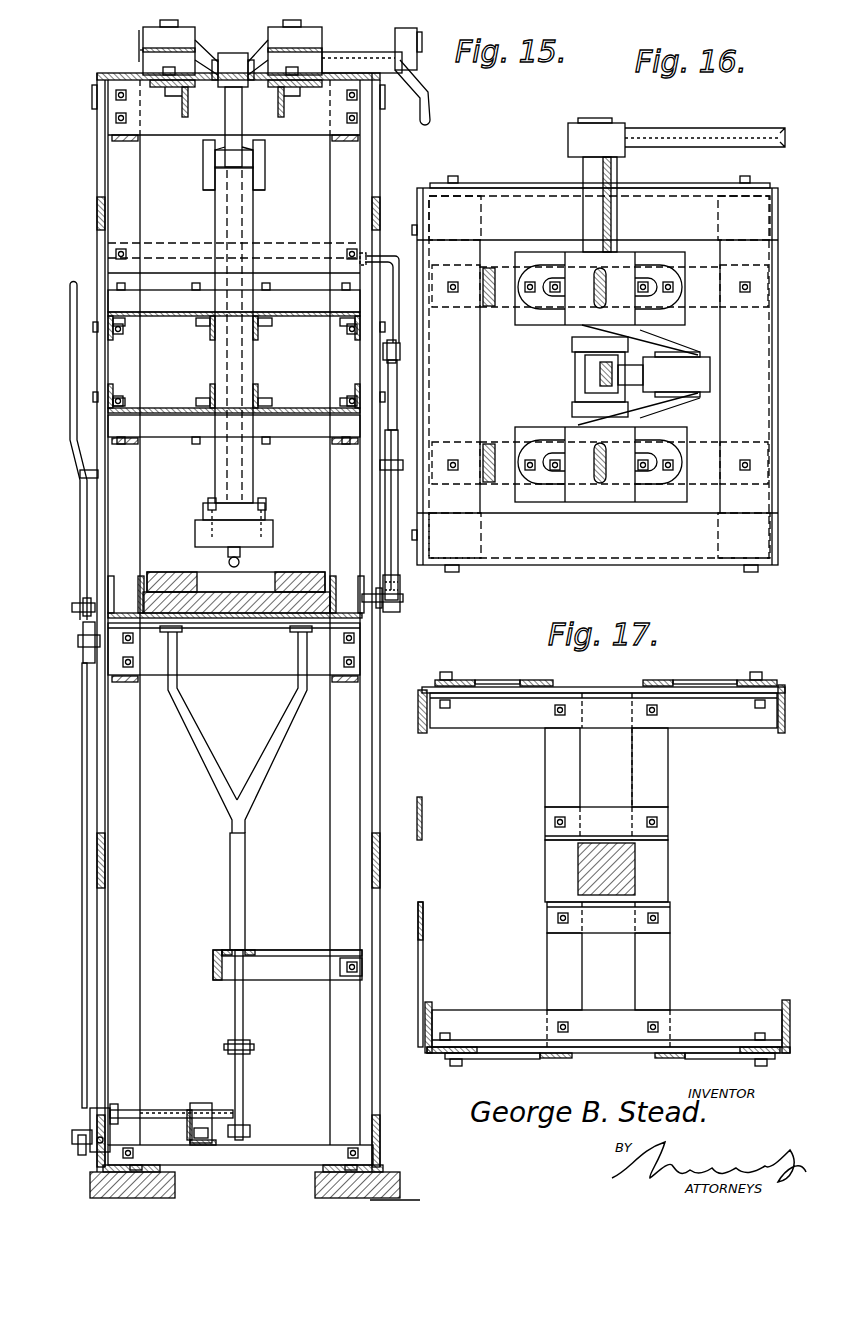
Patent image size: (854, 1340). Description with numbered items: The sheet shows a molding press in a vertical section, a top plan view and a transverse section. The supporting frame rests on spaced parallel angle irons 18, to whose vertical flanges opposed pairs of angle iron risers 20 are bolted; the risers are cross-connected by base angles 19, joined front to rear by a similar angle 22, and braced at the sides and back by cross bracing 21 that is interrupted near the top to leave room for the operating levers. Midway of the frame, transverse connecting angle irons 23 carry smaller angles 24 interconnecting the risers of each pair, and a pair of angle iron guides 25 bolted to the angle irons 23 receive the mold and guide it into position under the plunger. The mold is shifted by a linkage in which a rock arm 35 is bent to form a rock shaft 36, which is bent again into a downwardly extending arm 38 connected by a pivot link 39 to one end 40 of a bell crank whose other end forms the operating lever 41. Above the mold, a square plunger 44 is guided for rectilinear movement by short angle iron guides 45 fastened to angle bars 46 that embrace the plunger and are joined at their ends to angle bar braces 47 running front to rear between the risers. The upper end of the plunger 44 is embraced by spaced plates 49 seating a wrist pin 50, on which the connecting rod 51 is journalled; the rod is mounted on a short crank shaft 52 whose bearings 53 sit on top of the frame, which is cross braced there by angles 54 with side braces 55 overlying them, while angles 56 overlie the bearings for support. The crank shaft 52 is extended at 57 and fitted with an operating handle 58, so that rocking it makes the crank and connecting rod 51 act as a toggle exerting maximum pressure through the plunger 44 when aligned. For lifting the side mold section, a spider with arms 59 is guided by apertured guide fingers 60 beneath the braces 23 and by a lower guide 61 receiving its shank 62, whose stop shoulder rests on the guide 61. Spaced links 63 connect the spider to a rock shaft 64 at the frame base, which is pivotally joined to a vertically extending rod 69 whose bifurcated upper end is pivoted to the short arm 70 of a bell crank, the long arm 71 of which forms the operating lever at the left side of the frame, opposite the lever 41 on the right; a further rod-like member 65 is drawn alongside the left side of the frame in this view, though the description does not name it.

In FIG. 15, the angle irons 18 is at (383, 1148).
In FIG. 15, the base angles 19 is at (240, 1157).
In FIG. 15, the angle iron risers 20 is at (106, 200).
In FIG. 17, the angle iron risers 20 is at (428, 725).
In FIG. 15, the cross bracing 21 is at (96, 212).
In FIG. 17, the cross bracing 21 is at (560, 680).
In FIG. 15, the angle 22 is at (167, 124).
In FIG. 16, the angle 22 is at (428, 360).
In FIG. 15, the connecting angle irons 23 is at (248, 626).
In FIG. 15, the smaller angles 24 is at (108, 585).
In FIG. 15, the angle iron guides 25 is at (155, 572).
In FIG. 15, the rock arm 35 is at (240, 380).
In FIG. 16, the rock arm 35 is at (582, 375).
In FIG. 15, the rock shaft 36 is at (360, 262).
In FIG. 15, the downwardly extending arm 38 is at (355, 320).
In FIG. 15, the pivot link 39 is at (395, 425).
In FIG. 15, the end of bell crank lever 40 is at (395, 500).
In FIG. 15, the operating lever 41 is at (404, 602).
In FIG. 15, the plunger 44 is at (252, 482).
In FIG. 17, the plunger 44 is at (622, 875).
In FIG. 15, the guides 45 is at (210, 330).
In FIG. 17, the guides 45 is at (660, 820).
In FIG. 15, the angle bars 46 is at (262, 300).
In FIG. 17, the angle bars 46 is at (555, 780).
In FIG. 15, the angle bar braces 47 is at (115, 335).
In FIG. 17, the angle bar braces 47 is at (502, 718).
In FIG. 15, the spaced plates 49 is at (215, 185).
In FIG. 16, the spaced plates 49 is at (575, 343).
In FIG. 15, the wrist pin 50 is at (265, 155).
In FIG. 17, the wrist pin 50 is at (665, 920).
In FIG. 16, the connecting rod 51 is at (705, 378).
In FIG. 15, the crank shaft 52 is at (230, 55).
In FIG. 16, the crank shaft 52 is at (665, 350).
In FIG. 15, the bearings 53 is at (150, 46).
In FIG. 16, the bearings 53 is at (622, 266).
In FIG. 15, the cross braces 54 is at (220, 127).
In FIG. 15, the side braces 55 is at (96, 76).
In FIG. 16, the side braces 55 is at (487, 204).
In FIG. 15, the angles 56 is at (188, 106).
In FIG. 15, the extension of crank shaft 57 is at (360, 44).
In FIG. 16, the extension of crank shaft 57 is at (608, 185).
In FIG. 15, the operating handle 58 is at (438, 108).
In FIG. 16, the operating handle 58 is at (698, 135).
In FIG. 15, the spider arms 59 is at (292, 712).
In FIG. 15, the guide fingers 60 is at (158, 630).
In FIG. 15, the lower guide 61 is at (250, 952).
In FIG. 15, the shank 62 is at (241, 918).
In FIG. 15, the links 63 is at (243, 1092).
In FIG. 15, the rock shaft 64 is at (160, 1110).
In FIG. 15, the rod 65 is at (82, 790).
In FIG. 15, the vertically extending rod 69 is at (72, 1108).
In FIG. 15, the short arm 70 is at (75, 608).
In FIG. 15, the long arm 71 is at (73, 430).